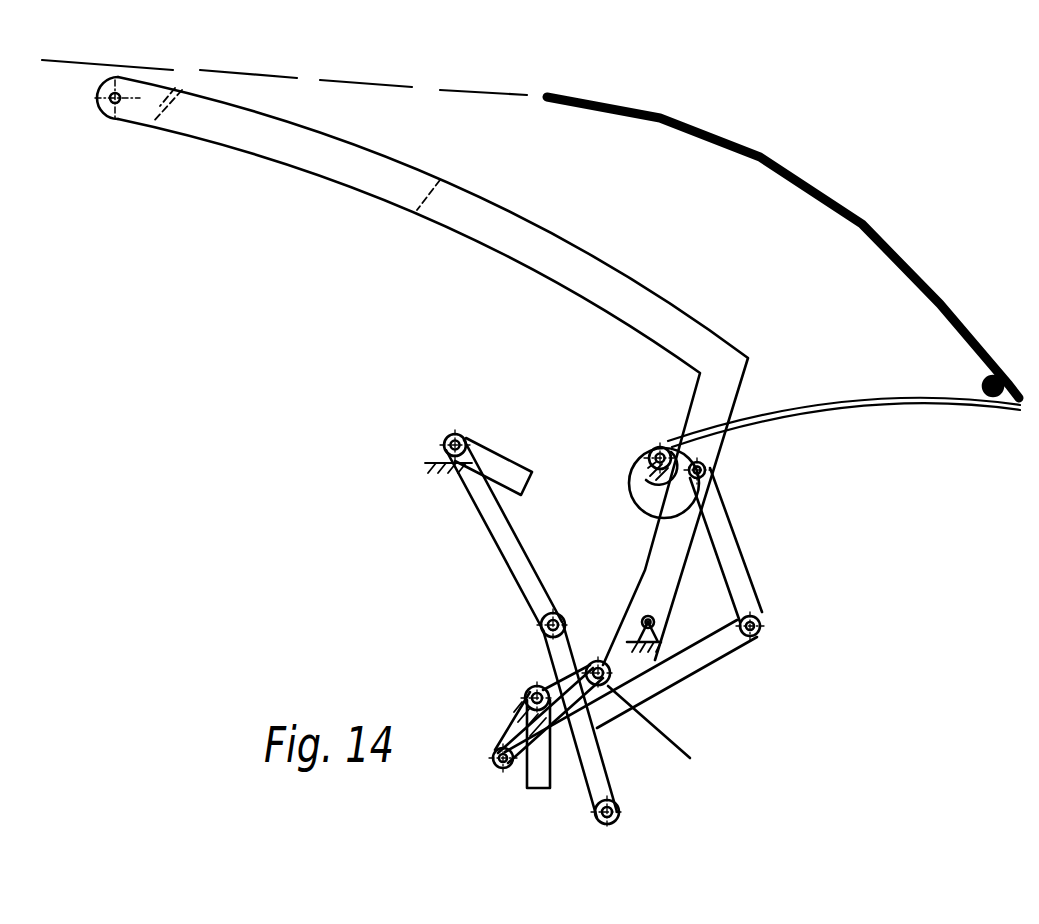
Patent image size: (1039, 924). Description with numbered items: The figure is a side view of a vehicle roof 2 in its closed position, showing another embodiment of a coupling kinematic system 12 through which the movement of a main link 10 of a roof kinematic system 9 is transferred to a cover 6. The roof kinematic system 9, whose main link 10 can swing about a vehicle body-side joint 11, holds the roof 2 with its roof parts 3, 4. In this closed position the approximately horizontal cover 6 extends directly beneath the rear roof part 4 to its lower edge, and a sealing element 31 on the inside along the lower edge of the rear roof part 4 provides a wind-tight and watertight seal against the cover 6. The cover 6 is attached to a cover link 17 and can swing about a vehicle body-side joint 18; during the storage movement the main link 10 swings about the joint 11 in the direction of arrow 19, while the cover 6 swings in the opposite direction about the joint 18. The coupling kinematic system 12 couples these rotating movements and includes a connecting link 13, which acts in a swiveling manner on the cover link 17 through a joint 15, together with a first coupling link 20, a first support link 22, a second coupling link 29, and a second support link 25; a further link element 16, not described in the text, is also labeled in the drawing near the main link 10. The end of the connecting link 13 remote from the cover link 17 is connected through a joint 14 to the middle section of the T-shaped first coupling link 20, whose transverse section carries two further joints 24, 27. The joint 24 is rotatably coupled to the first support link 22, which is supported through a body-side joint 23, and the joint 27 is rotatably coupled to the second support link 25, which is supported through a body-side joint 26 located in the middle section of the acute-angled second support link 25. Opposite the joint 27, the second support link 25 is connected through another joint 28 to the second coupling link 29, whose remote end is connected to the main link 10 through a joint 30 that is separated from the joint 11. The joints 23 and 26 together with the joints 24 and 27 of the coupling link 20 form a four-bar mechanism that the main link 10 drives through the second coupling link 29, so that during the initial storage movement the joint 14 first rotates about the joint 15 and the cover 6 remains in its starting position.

The roof 2 is at (262, 58).
The roof part 3 is at (352, 78).
The rear roof part 4 is at (757, 162).
The cover 6 is at (856, 406).
The roof kinematic system 9 is at (336, 200).
The main link 10 is at (487, 210).
The vehicle body-side joint 11 is at (662, 614).
The coupling kinematic system 12 is at (727, 683).
The connecting link 13 is at (724, 527).
The joint 14 is at (765, 627).
The joint 15 is at (710, 468).
The link 16 is at (606, 642).
The cover link 17 is at (647, 505).
The vehicle body-side joint 18 is at (660, 446).
The arrow 19 is at (667, 601).
The first coupling link 20 is at (660, 685).
The first support link 22 is at (500, 562).
The vehicle body-side joint 23 is at (463, 437).
The joint 24 is at (538, 633).
The second support link 25 is at (577, 782).
The vehicle body-side joint 26 is at (526, 697).
The joint 27 is at (622, 815).
The joint 28 is at (496, 768).
The second coupling link 29 is at (612, 738).
The joint 30 is at (688, 754).
The sealing element 31 is at (982, 381).